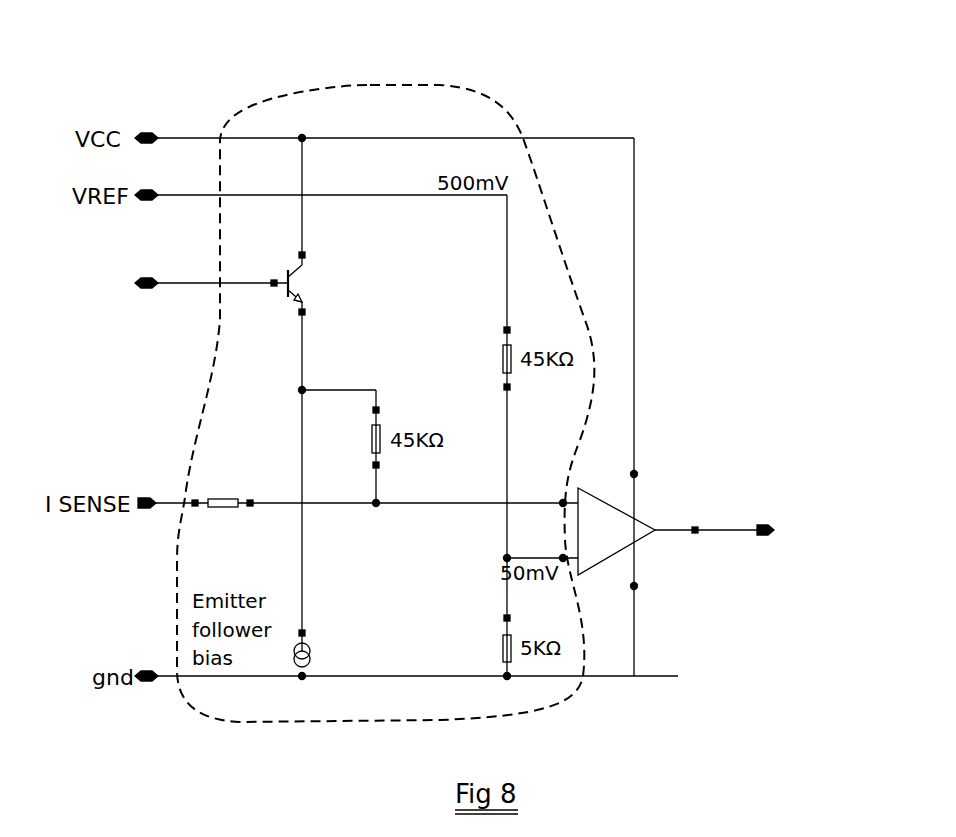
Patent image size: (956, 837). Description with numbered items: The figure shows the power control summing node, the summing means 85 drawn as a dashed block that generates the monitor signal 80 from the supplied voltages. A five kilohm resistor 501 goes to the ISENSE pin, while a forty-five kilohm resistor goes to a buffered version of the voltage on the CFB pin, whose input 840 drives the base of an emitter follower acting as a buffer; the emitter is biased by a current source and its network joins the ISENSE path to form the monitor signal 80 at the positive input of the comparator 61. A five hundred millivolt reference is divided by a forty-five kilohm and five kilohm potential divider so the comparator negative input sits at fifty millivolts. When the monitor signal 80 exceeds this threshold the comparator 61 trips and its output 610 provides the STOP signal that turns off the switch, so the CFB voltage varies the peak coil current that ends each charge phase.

The summing means 85 is at (363, 85).
The current feedback (CFB) input 840 is at (188, 283).
The current sense resistor 501 is at (168, 503).
The monitor signal 80 is at (525, 503).
The comparator output 610 is at (718, 530).
The comparator 61 is at (637, 542).